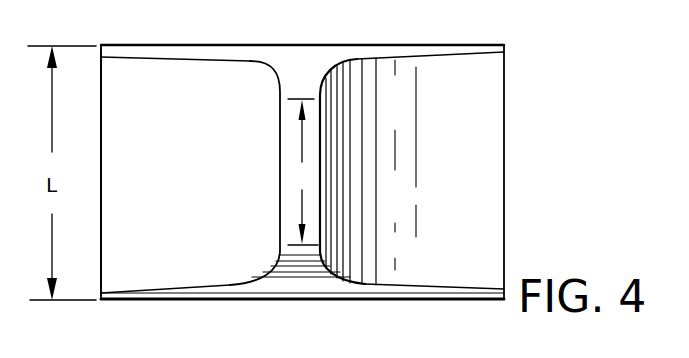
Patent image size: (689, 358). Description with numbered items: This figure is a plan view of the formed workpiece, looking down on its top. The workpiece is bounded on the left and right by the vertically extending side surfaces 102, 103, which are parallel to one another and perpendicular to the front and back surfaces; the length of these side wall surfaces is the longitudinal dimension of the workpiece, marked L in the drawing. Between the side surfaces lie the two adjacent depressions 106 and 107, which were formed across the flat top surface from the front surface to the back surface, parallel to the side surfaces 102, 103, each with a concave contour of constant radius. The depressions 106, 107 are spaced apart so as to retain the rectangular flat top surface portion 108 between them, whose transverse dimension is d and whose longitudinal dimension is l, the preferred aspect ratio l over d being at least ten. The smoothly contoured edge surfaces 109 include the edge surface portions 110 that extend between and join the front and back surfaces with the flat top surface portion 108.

The side surface 102 is at (504, 195).
The side surface 103 is at (101, 130).
The depression 106 is at (453, 140).
The depression 107 is at (116, 272).
The flat top surface portion 108 is at (317, 122).
The smoothly contoured edge surface 109 is at (456, 292).
The edge surface portion 110 is at (307, 55).